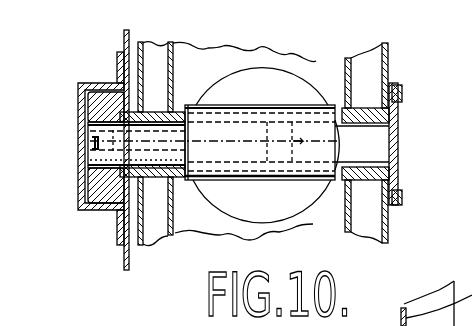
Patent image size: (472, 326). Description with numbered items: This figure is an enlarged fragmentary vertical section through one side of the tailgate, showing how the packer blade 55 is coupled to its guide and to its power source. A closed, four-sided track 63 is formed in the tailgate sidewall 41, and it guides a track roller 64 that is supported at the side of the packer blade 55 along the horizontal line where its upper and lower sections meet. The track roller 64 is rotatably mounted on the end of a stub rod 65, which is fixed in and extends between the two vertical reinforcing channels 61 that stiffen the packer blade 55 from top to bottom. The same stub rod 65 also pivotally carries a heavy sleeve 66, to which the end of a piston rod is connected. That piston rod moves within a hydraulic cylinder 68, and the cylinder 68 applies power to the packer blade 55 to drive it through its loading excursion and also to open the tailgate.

The sidewall 41 is at (123, 262).
The packer blade 55 is at (268, 43).
The reinforcing channel 61 is at (175, 53).
The track 63 is at (100, 211).
The track roller 64 is at (88, 188).
The stub rod 65 is at (172, 127).
The sleeve 66 is at (248, 107).
The hydraulic cylinder 68 is at (299, 80).